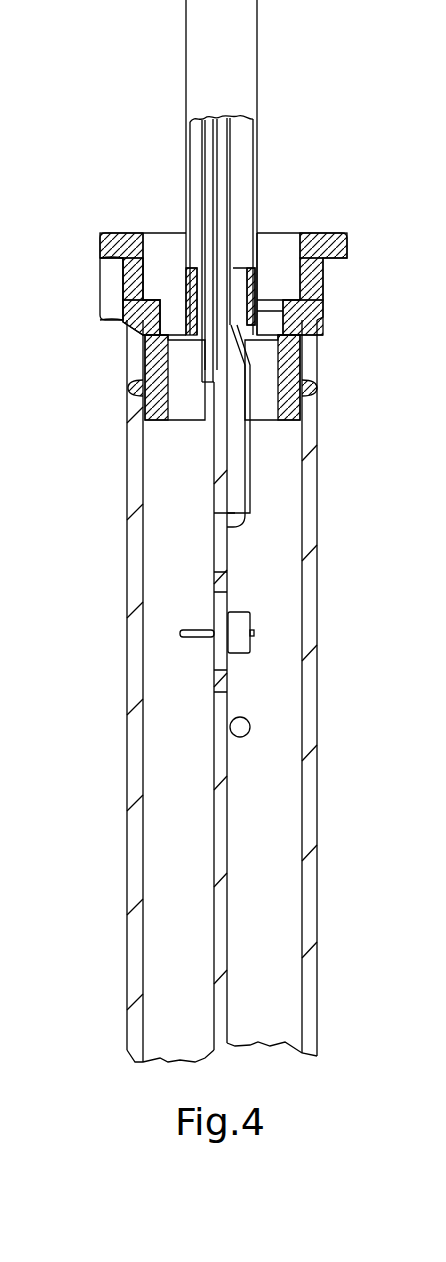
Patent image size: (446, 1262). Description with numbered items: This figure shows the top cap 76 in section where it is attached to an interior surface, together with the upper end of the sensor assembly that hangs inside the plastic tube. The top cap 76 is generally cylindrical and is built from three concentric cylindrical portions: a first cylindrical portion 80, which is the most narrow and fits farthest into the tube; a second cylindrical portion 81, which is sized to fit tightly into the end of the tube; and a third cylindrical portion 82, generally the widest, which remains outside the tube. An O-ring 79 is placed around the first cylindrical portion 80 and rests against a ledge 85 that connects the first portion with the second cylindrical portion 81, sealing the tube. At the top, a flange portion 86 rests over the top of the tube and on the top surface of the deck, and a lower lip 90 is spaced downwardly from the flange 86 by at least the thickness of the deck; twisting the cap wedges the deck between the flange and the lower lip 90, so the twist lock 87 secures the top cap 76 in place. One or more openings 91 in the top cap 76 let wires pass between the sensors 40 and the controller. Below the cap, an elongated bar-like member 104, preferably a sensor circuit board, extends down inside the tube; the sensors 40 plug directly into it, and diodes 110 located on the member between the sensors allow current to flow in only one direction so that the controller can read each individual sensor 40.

The flange portion 86 is at (283, 232).
The top cap 76 is at (340, 232).
The twist lock 87 is at (113, 277).
The third cylindrical portion 82 is at (310, 280).
The openings 91 is at (240, 307).
The second cylindrical portion 81 is at (300, 345).
The lower lip 90 is at (100, 310).
The O-ring 79 is at (303, 385).
The ledge 85 is at (133, 383).
The first cylindrical portion 80 is at (302, 418).
The sensors 40 is at (242, 622).
The diodes 110 is at (250, 722).
The elongated bar-like member 104 is at (222, 928).